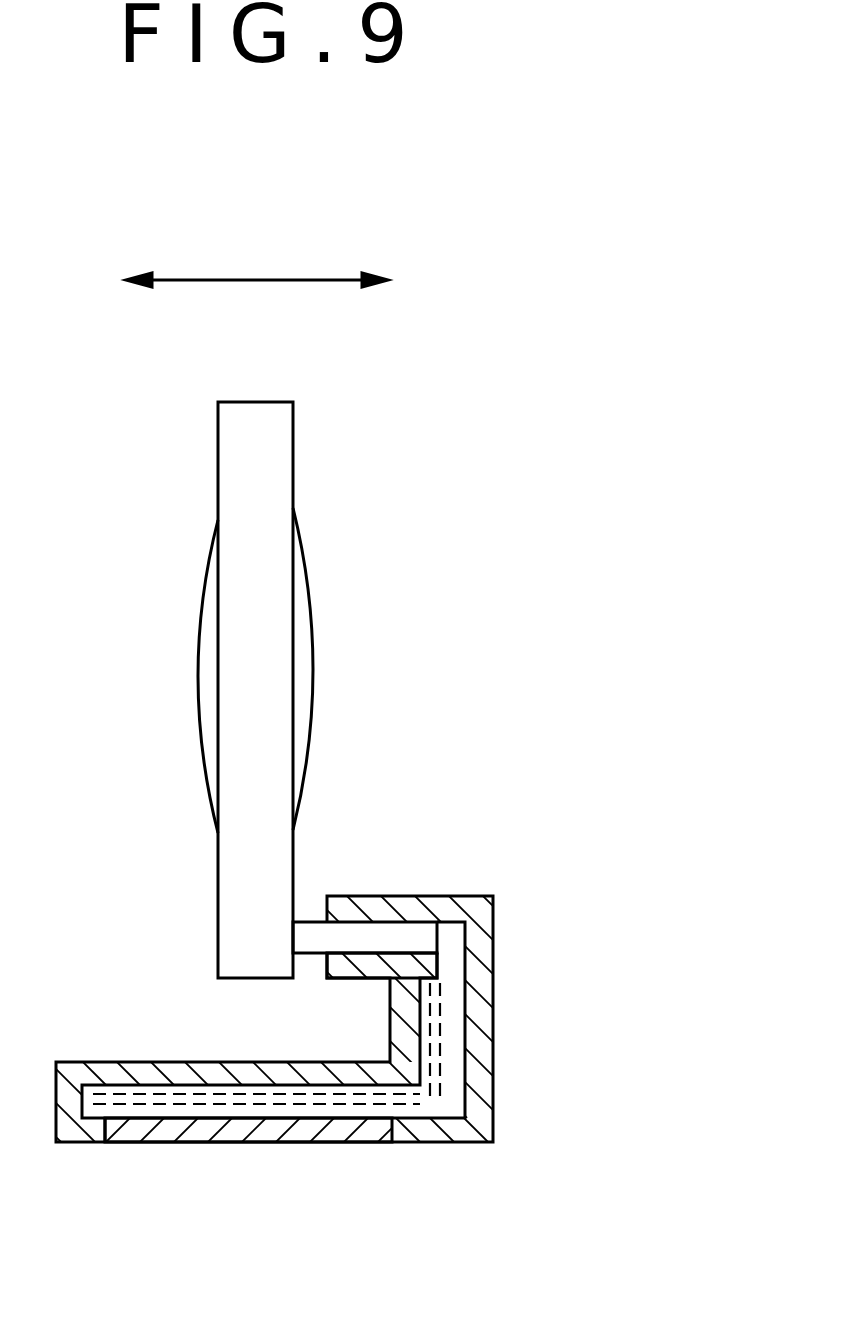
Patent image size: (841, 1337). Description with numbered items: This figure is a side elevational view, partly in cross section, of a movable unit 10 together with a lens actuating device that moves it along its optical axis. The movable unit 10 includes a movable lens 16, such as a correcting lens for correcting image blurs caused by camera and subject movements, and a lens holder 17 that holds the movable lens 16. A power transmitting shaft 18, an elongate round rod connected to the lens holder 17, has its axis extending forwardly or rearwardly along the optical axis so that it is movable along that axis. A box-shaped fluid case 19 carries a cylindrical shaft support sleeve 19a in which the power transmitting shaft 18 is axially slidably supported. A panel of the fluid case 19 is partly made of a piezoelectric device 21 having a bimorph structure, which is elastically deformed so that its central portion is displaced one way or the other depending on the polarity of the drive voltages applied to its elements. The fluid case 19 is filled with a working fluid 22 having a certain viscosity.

The movable unit 10 is at (329, 682).
The movable lens 16 is at (312, 618).
The lens holder 17 is at (290, 423).
The power transmitting shaft 18 is at (314, 930).
The fluid case 19 is at (352, 1097).
The shaft support sleeve 19a is at (347, 975).
The piezoelectric device 21 is at (273, 1142).
The working fluid 22 is at (160, 1142).